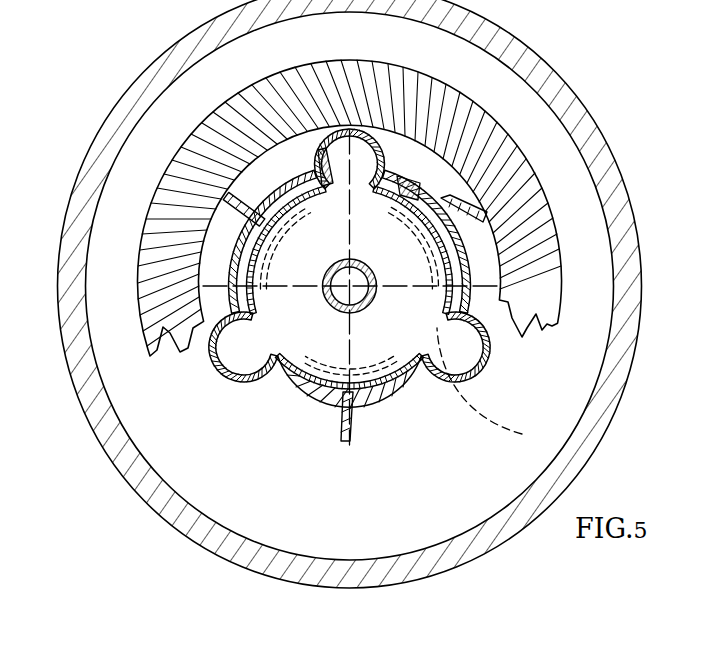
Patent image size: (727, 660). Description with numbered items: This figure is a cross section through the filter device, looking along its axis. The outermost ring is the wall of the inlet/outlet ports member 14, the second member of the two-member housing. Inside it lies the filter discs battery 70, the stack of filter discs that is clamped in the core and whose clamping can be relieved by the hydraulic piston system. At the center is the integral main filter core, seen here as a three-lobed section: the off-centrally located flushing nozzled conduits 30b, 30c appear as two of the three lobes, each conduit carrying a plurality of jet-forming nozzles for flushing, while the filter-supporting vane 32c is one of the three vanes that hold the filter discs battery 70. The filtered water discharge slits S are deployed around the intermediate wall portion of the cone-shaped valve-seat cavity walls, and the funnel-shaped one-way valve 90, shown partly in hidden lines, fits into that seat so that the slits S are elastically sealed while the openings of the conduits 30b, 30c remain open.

The inlet/outlet ports member 14 is at (107, 427).
The filter discs battery 70 is at (183, 167).
The flushing nozzled conduit 30b is at (428, 393).
The flushing nozzled conduit 30c is at (236, 395).
The filter-supporting vane 32c is at (336, 424).
The one-way valve 90 is at (470, 366).
The filtered water discharge slits S is at (420, 185).